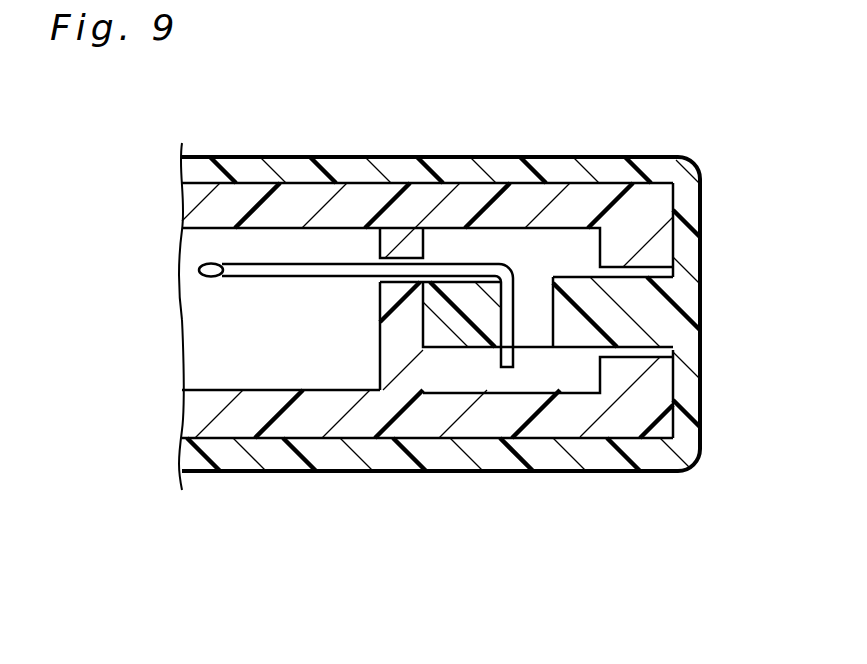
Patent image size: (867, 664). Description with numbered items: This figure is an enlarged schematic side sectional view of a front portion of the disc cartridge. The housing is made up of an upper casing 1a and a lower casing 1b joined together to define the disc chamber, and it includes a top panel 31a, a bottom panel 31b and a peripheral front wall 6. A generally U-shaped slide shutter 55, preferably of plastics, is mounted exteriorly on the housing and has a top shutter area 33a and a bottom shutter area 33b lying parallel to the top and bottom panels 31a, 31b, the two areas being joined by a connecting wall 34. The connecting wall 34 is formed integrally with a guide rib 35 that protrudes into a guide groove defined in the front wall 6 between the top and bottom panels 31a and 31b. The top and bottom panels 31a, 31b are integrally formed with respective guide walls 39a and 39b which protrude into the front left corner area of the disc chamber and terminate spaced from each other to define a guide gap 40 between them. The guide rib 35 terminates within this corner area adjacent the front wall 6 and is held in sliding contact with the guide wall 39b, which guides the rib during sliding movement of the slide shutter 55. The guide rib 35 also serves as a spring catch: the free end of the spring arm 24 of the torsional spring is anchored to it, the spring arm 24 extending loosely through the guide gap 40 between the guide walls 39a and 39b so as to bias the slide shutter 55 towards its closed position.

The slide shutter 55 is at (606, 152).
The upper casing 1a is at (240, 198).
The lower casing 1b is at (287, 427).
The top shutter area 33a is at (345, 168).
The bottom shutter area 33b is at (348, 470).
The bottom panel 31b is at (190, 197).
The top panel 31a is at (197, 412).
The guide wall 39a is at (417, 247).
The guide wall 39b is at (392, 323).
The guide gap 40 is at (383, 274).
The guide rib 35 is at (469, 340).
The connecting wall 34 is at (700, 230).
The front wall 6 is at (673, 380).
The spring arm 24 is at (257, 272).